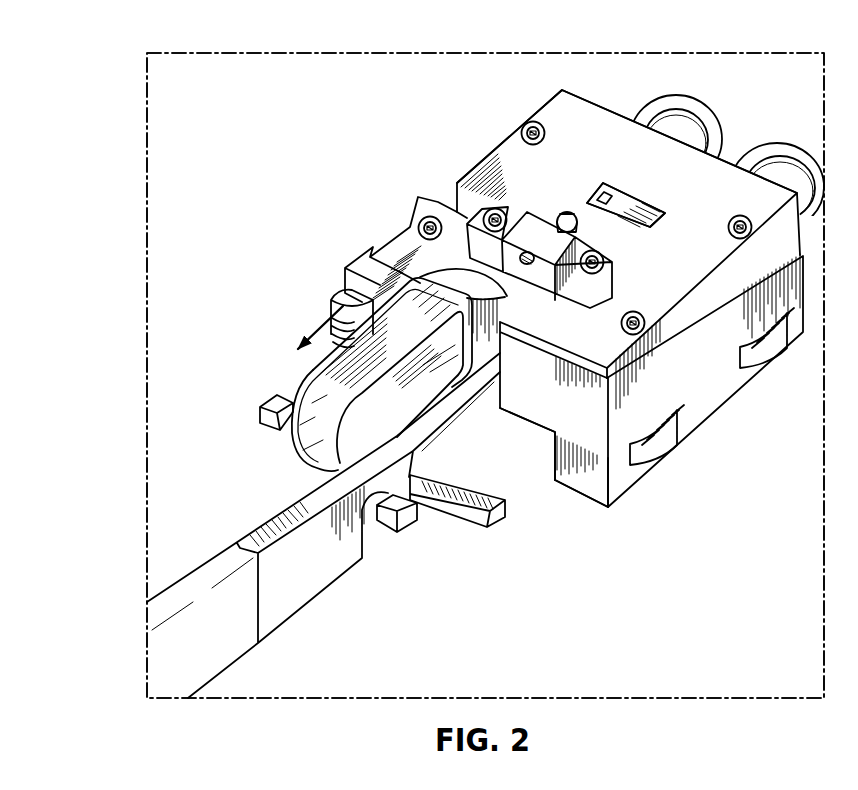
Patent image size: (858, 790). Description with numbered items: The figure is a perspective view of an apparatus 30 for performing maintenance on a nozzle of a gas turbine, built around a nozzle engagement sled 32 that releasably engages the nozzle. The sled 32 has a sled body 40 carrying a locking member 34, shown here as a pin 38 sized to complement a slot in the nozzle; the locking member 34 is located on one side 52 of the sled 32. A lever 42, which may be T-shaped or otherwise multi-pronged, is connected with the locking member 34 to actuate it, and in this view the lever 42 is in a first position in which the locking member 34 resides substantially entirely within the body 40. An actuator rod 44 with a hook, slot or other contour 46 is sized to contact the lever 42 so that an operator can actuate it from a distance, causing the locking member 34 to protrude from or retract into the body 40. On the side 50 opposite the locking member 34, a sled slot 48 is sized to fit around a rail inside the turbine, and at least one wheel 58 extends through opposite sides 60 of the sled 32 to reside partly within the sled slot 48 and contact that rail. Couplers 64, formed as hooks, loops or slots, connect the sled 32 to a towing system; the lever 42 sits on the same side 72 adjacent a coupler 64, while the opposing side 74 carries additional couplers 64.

The apparatus 30 is at (136, 170).
The nozzle engagement sled 32 is at (447, 169).
The locking member 34 is at (623, 206).
The pin 38 is at (623, 206).
The sled body 40 is at (543, 122).
The lever 42 is at (498, 516).
The actuator rod 44 is at (322, 564).
The contour 46 is at (403, 513).
The sled slot 48 is at (512, 452).
The side 50 is at (594, 499).
The side 52 is at (726, 249).
The wheel 58 is at (756, 358).
The opposite sides 60 is at (708, 403).
The coupler 64 is at (763, 147).
The side 72 is at (531, 390).
The opposing side 74 is at (591, 96).